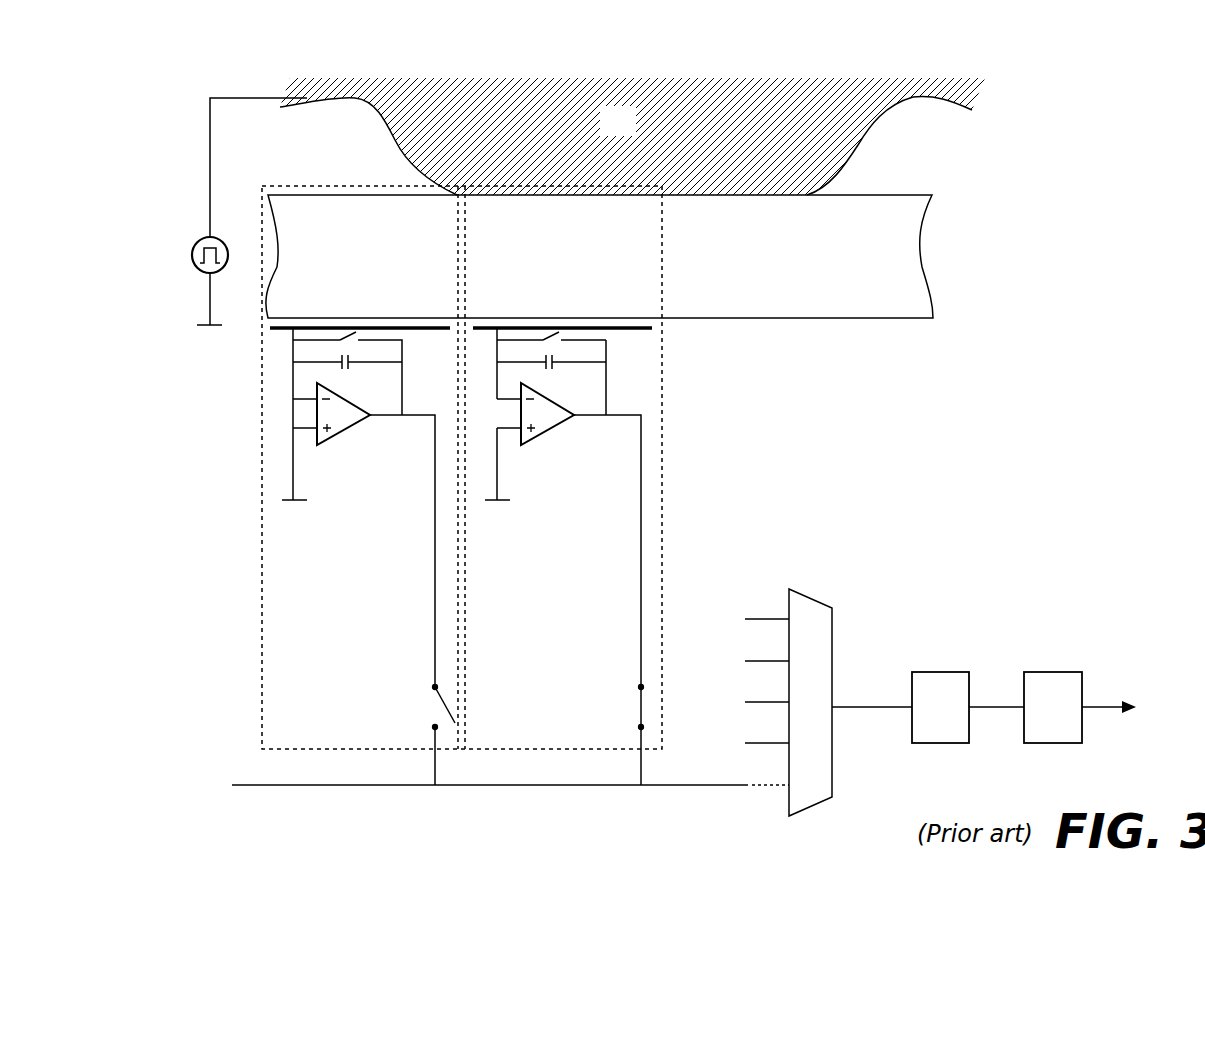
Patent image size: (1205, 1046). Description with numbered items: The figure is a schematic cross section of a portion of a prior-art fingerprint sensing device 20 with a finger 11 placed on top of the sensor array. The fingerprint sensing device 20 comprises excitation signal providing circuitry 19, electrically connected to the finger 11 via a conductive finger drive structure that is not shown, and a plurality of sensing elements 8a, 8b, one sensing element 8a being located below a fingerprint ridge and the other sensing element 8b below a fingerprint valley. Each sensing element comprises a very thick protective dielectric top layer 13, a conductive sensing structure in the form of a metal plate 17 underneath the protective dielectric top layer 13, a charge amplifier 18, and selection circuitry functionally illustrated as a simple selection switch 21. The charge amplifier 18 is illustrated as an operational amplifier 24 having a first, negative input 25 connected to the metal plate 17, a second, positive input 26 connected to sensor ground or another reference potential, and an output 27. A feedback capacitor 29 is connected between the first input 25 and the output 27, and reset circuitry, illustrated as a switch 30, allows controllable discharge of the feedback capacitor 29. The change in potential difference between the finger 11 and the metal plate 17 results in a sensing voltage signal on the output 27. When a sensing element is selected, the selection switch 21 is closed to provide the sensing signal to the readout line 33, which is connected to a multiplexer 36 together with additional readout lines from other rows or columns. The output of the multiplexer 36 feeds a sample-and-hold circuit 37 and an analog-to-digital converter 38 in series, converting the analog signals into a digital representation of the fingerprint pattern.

The sensing element 8a is at (500, 765).
The sensing element 8b is at (235, 634).
The finger 11 is at (633, 134).
The protective dielectric top layer 13 is at (584, 252).
The metal plate 17 is at (633, 328).
The charge amplifier 18 is at (544, 460).
The excitation signal providing circuitry 19 is at (197, 268).
The fingerprint sensing device 20 is at (1090, 167).
The selection switch 21 is at (623, 695).
The operational amplifier 24 is at (549, 392).
The first input 25 is at (521, 401).
The second input 26 is at (510, 433).
The output 27 is at (575, 420).
The feedback capacitor 29 is at (570, 344).
The switch 30 is at (547, 337).
The readout line 33 is at (527, 786).
The multiplexer 36 is at (812, 597).
The sample-and-hold circuit 37 is at (942, 672).
The analog-to-digital converter 38 is at (1057, 672).